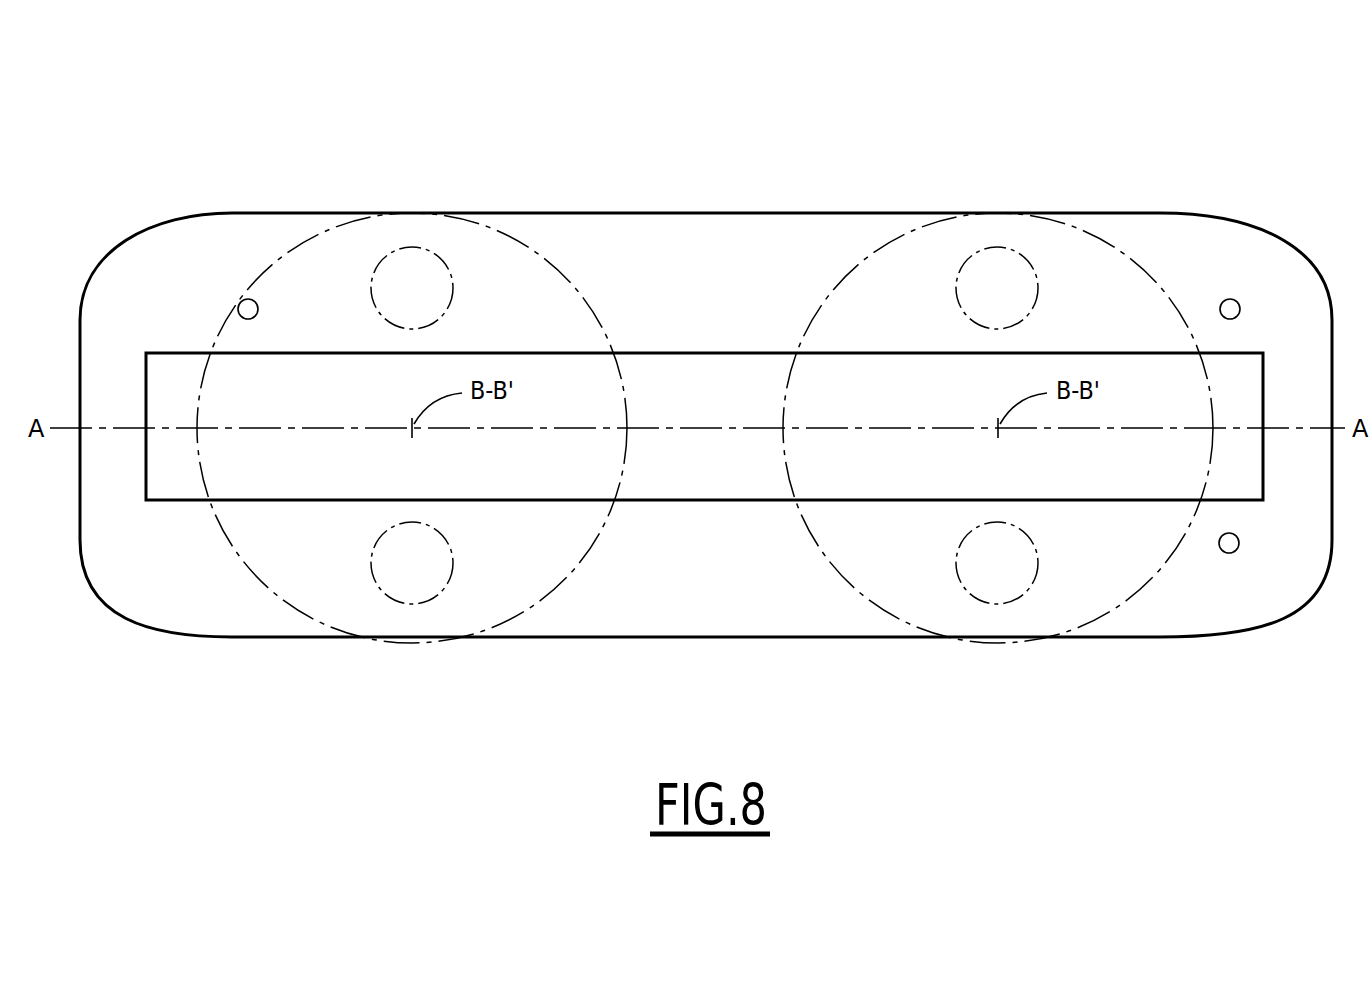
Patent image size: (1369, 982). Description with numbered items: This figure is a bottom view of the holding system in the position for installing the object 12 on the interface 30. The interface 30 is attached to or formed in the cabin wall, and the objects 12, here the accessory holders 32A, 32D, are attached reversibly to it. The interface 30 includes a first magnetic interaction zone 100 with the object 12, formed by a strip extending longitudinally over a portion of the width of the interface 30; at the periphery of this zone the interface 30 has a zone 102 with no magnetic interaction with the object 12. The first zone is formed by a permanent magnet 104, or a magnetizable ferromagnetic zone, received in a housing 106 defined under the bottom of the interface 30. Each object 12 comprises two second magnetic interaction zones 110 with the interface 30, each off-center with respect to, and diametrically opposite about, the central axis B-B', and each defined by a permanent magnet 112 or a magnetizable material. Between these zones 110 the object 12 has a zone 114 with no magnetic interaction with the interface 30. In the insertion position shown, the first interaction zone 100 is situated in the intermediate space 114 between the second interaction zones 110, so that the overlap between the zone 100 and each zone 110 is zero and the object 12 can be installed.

The object 12 is at (490, 170).
The interface 30 is at (1290, 178).
The accessory holder 32A is at (545, 254).
The mounting portion 32D is at (1140, 248).
The first magnetic interaction zone 100 is at (647, 500).
The zone with no magnetic interaction 102 is at (699, 260).
The permanent magnet 104 is at (242, 472).
The housing 106 is at (669, 350).
The second magnetic interaction zone 110 is at (378, 258).
The permanent magnet 112 is at (413, 290).
The zone with no magnetic interaction 114 is at (372, 340).